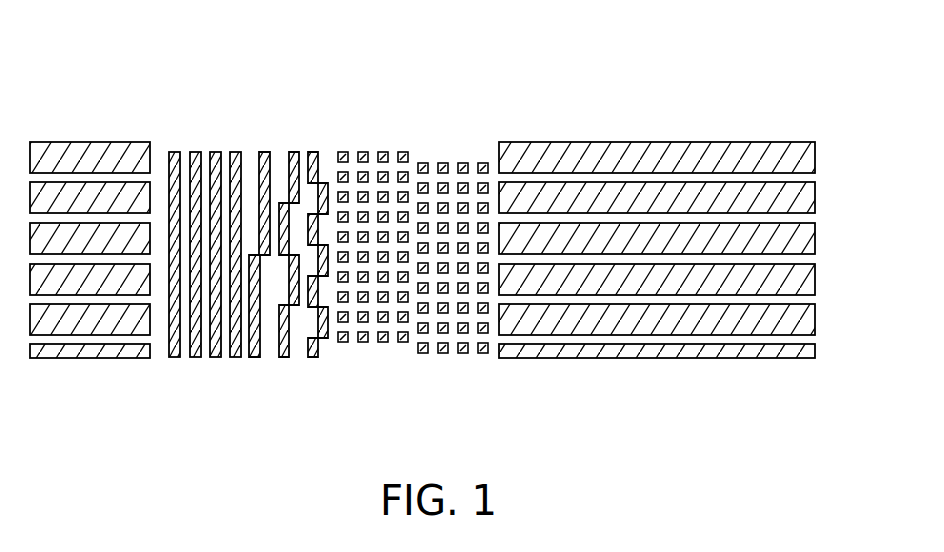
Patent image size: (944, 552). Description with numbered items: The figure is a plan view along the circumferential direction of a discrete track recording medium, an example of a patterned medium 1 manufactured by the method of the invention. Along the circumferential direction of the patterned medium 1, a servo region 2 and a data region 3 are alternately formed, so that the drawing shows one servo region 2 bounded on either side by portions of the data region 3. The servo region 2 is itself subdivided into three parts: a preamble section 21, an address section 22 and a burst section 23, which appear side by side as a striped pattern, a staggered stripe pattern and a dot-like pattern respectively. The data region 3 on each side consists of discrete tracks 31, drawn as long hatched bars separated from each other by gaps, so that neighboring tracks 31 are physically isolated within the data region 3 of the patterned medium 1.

The patterned medium 1 is at (90, 93).
The servo region 2 is at (167, 130).
The data region 3 is at (497, 130).
The preamble section 21 is at (240, 368).
The address section 22 is at (327, 368).
The burst section 23 is at (490, 368).
The discrete track 31 is at (796, 164).